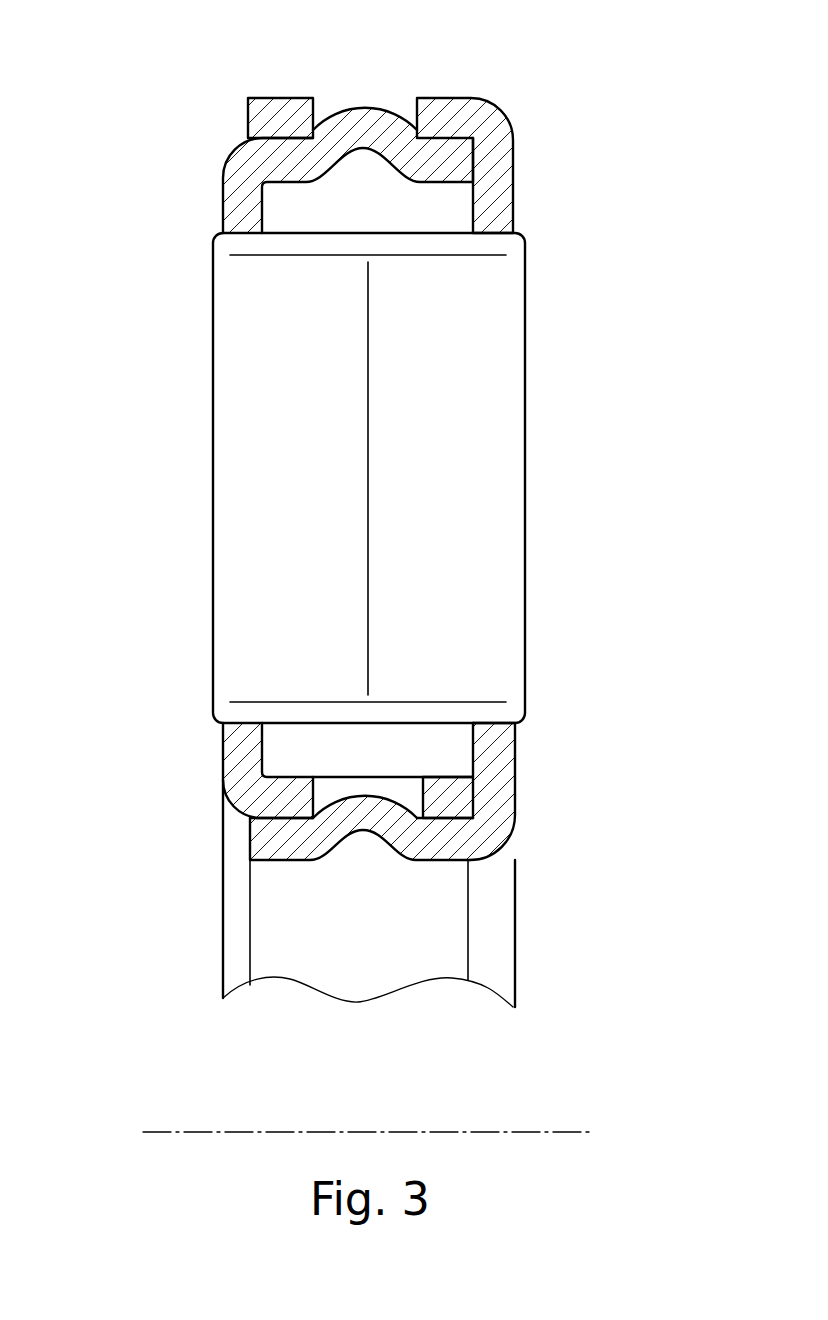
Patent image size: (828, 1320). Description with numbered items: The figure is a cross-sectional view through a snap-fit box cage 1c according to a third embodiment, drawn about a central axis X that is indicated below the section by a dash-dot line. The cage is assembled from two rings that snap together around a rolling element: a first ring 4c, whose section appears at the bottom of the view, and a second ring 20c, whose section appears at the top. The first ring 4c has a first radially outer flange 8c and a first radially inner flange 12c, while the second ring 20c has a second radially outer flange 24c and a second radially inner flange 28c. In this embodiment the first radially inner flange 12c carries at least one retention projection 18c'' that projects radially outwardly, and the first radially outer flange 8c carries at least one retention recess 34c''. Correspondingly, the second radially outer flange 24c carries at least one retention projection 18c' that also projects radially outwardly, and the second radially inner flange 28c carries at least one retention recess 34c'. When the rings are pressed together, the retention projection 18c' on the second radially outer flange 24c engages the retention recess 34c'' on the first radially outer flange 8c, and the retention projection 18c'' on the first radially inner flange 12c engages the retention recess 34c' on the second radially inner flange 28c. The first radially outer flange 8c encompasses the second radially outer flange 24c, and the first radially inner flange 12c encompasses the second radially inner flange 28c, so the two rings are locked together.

The snap-fit box cage 1c is at (535, 145).
The first ring 4c is at (518, 758).
The first radially outer flange 8c is at (458, 118).
The first radially inner flange 12c is at (433, 838).
The retention projection 18c' is at (368, 72).
The retention projection 18c'' is at (365, 866).
The second ring 20c is at (217, 197).
The second radially outer flange 24c is at (272, 165).
The second radially inner flange 28c is at (277, 796).
The retention recess 34c' is at (520, 797).
The retention recess 34c'' is at (289, 76).
The rotation axis X is at (552, 1132).